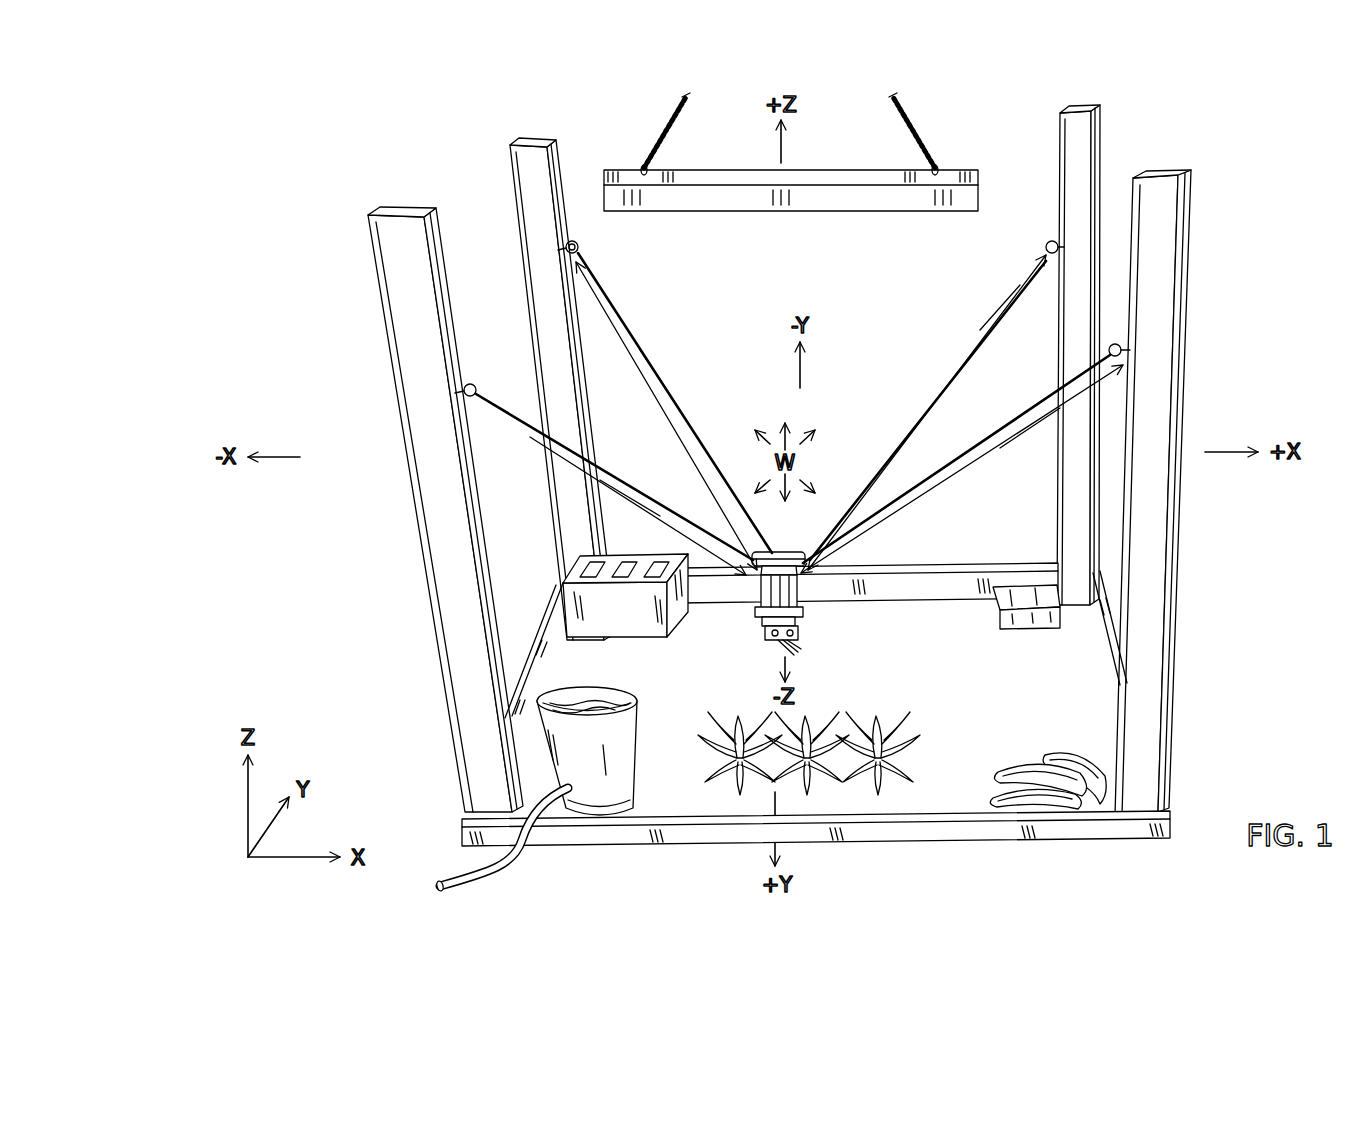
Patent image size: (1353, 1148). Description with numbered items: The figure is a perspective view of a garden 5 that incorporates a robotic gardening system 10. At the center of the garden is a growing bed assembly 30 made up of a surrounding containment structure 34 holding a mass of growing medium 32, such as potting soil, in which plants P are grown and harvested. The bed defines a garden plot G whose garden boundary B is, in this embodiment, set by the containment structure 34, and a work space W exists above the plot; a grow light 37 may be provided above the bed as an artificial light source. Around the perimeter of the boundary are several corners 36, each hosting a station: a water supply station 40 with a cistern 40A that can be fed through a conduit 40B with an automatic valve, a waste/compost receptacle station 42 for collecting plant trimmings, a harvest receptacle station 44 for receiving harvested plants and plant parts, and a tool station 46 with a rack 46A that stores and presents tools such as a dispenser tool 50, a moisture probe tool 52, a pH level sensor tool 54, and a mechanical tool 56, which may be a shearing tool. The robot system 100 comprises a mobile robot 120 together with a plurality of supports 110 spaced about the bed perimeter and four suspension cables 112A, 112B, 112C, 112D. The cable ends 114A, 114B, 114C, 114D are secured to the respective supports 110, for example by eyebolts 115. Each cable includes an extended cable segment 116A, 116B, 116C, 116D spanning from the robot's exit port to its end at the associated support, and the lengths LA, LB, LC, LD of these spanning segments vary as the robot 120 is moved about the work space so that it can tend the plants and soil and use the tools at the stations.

The garden 5 is at (380, 583).
The robotic gardening system 10 is at (410, 656).
The growing bed assembly 30 is at (935, 850).
The growing medium 32 is at (848, 676).
The containment structure 34 is at (1078, 836).
The corners 36 is at (678, 496).
The grow light 37 is at (826, 170).
The water supply station 40 is at (652, 778).
The cistern 40A is at (577, 762).
The conduit 40B is at (522, 871).
The waste/compost receptacle station 42 is at (1030, 750).
The harvest receptacle station 44 is at (1040, 600).
The tool station 46 is at (560, 592).
The rack 46A is at (597, 621).
The dispenser tool 50 is at (654, 560).
The moisture probe tool 52 is at (622, 560).
The pH level sensor tool 54 is at (590, 560).
The mechanical tool 56 is at (800, 637).
The robot system 100 is at (786, 292).
The supports 110 is at (368, 247).
The cable 112A is at (508, 408).
The cable 112B is at (625, 312).
The cable 112C is at (1025, 274).
The cable 112D is at (1030, 408).
The cable end 114A is at (463, 398).
The cable end 114B is at (566, 257).
The cable end 114C is at (1045, 250).
The cable end 114D is at (1120, 346).
The eyebolt 115 is at (583, 247).
The extended cable segment 116A is at (635, 487).
The extended cable segment 116B is at (658, 378).
The extended cable segment 116C is at (995, 337).
The extended cable segment 116D is at (1032, 437).
The mobile robot 120 is at (748, 620).
The garden boundary B is at (924, 572).
The garden plot G is at (682, 694).
The plants P is at (815, 724).
The length of extended cable segment LA is at (620, 498).
The length of extended cable segment LB is at (666, 416).
The length of extended cable segment LC is at (927, 412).
The length of extended cable segment LD is at (962, 469).